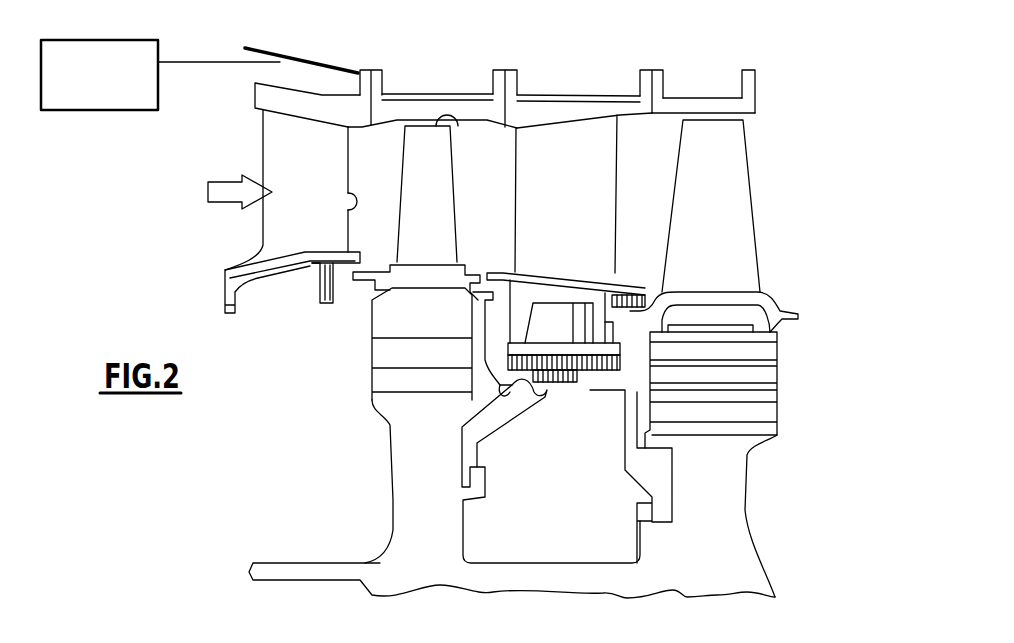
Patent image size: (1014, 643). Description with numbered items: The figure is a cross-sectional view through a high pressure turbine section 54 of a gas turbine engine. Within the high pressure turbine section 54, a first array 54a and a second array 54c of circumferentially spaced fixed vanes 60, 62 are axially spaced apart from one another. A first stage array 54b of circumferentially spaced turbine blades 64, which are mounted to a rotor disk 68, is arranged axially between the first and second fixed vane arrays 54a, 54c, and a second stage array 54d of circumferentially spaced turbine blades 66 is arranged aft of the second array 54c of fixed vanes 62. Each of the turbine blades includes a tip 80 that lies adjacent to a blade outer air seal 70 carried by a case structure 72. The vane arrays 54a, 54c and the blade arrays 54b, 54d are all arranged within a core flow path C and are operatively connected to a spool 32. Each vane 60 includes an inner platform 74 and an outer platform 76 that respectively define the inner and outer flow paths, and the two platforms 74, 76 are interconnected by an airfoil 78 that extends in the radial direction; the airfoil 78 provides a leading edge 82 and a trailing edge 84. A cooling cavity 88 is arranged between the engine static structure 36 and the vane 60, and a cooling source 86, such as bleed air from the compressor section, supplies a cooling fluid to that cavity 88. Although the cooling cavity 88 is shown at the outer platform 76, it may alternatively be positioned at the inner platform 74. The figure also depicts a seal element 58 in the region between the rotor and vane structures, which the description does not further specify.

The spool 32 is at (253, 569).
The engine static structure 36 is at (278, 78).
The high pressure turbine section 54 is at (527, 69).
The first array of fixed vanes 54a is at (303, 88).
The first stage array of turbine blades 54b is at (440, 93).
The second array of fixed vanes 54c is at (547, 97).
The second stage array of turbine blades 54d is at (700, 97).
The seal assembly 58 is at (487, 273).
The vane 60 is at (258, 167).
The vane 62 is at (515, 172).
The turbine blade 64 is at (398, 181).
The turbine blade 66 is at (672, 186).
The rotor disk 68 is at (447, 520).
The blade outer air seal 70 is at (393, 112).
The case structure 72 is at (498, 82).
The inner platform 74 is at (273, 268).
The outer platform 76 is at (278, 98).
The airfoil 78 is at (315, 147).
The tip 80 is at (458, 126).
The leading edge 82 is at (262, 137).
The trailing edge 84 is at (350, 211).
The cooling source 86 is at (100, 112).
The cooling cavity 88 is at (284, 58).
The core flow path C is at (222, 205).